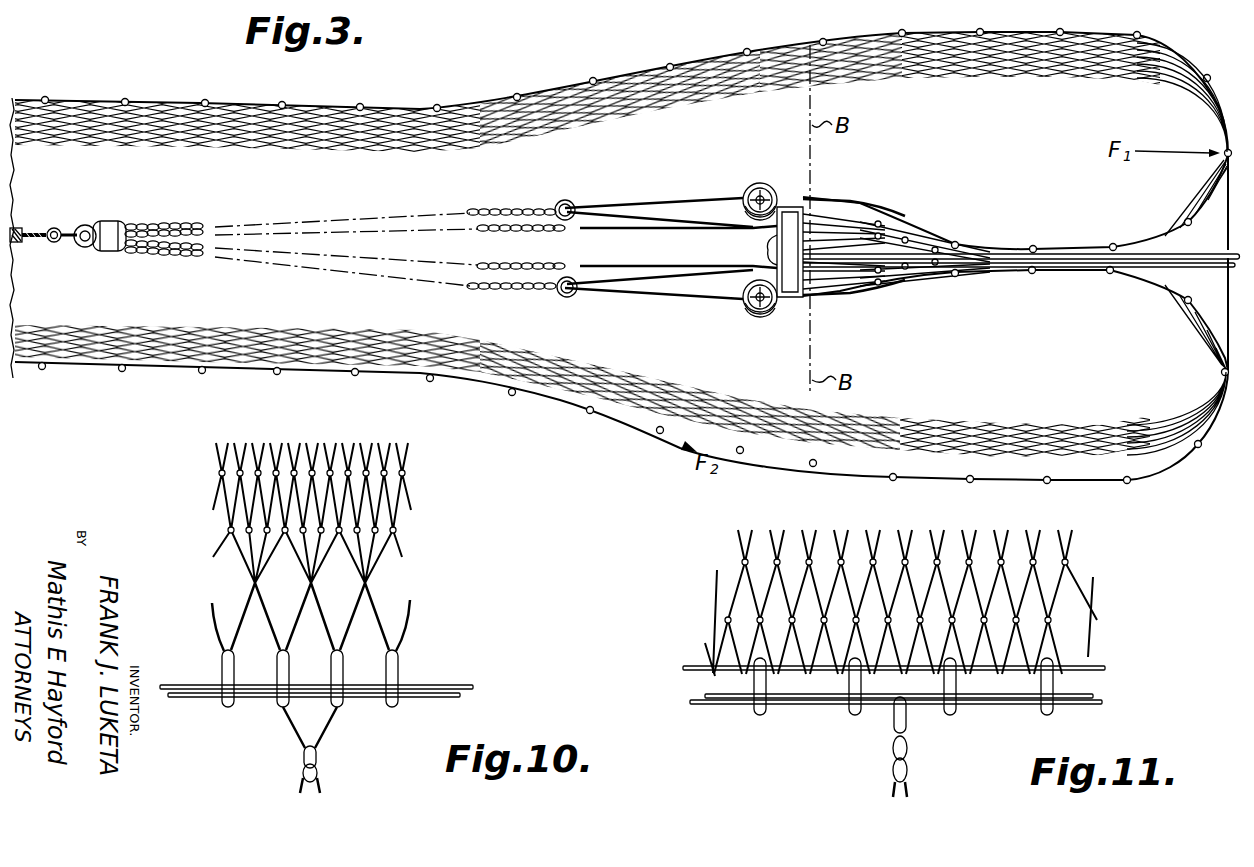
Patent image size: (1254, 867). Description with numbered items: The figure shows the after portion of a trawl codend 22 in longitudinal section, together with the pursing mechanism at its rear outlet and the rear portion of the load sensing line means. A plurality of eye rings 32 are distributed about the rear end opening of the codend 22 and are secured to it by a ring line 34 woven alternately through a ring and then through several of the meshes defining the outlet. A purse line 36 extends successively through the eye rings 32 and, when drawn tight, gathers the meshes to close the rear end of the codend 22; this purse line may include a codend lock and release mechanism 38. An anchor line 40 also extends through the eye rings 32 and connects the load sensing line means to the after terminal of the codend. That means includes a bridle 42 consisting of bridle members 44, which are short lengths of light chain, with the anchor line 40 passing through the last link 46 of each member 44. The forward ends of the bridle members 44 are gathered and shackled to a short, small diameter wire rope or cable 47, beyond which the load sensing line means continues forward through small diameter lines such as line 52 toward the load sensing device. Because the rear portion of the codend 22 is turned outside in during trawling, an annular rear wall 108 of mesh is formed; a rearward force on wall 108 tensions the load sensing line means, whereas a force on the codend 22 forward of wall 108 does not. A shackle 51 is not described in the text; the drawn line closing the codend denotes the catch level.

In FIG. 3, the codend 22 is at (702, 46).
In FIG. 10, the codend 22 is at (220, 476).
In FIG. 11, the codend 22 is at (1068, 556).
In FIG. 3, the eye rings 32 is at (757, 183).
In FIG. 10, the eye rings 32 is at (222, 702).
In FIG. 11, the eye rings 32 is at (762, 714).
In FIG. 3, the ring line 34 is at (820, 200).
In FIG. 10, the ring line 34 is at (210, 627).
In FIG. 11, the ring line 34 is at (1093, 668).
In FIG. 3, the purse line 36 is at (1170, 272).
In FIG. 10, the purse line 36 is at (410, 685).
In FIG. 11, the purse line 36 is at (996, 700).
In FIG. 3, the codend lock and release mechanism 38 is at (787, 300).
In FIG. 3, the anchor line 40 is at (672, 225).
In FIG. 10, the anchor line 40 is at (318, 745).
In FIG. 11, the anchor line 40 is at (735, 703).
In FIG. 3, the bridle 42 is at (413, 206).
In FIG. 3, the bridle members 44 is at (165, 226).
In FIG. 10, the bridle members 44 is at (322, 778).
In FIG. 11, the bridle members 44 is at (890, 776).
In FIG. 3, the last link 46 is at (568, 198).
In FIG. 10, the last link 46 is at (302, 757).
In FIG. 11, the last link 46 is at (893, 713).
In FIG. 3, the wire rope or cable 47 is at (30, 229).
In FIG. 3, the shackle 51 is at (103, 224).
In FIG. 3, the small diameter line 52 is at (72, 251).
In FIG. 3, the annular rear wall 108 is at (1213, 180).